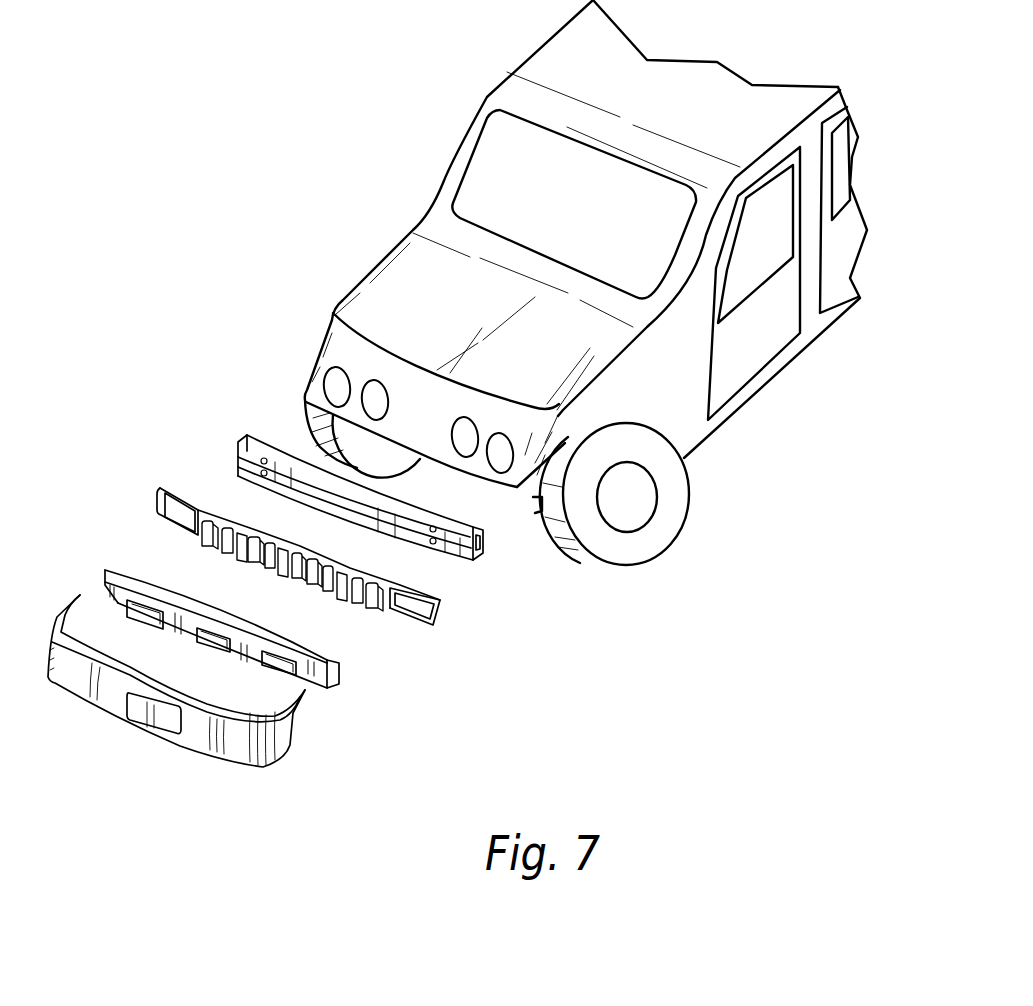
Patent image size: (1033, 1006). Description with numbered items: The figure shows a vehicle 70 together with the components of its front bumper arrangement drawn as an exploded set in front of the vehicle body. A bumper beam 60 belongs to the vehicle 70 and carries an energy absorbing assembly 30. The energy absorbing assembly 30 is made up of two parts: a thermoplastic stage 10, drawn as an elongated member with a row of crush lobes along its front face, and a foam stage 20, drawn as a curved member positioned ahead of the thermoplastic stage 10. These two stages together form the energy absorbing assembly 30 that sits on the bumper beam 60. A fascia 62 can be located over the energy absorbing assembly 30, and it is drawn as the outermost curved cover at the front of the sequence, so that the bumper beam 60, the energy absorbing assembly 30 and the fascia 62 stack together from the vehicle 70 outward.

The vehicle 70 is at (443, 181).
The bumper beam 60 is at (240, 438).
The thermoplastic stage 10 is at (185, 495).
The foam stage 20 is at (128, 570).
The fascia 62 is at (192, 737).
The energy absorbing assembly 30 is at (330, 698).